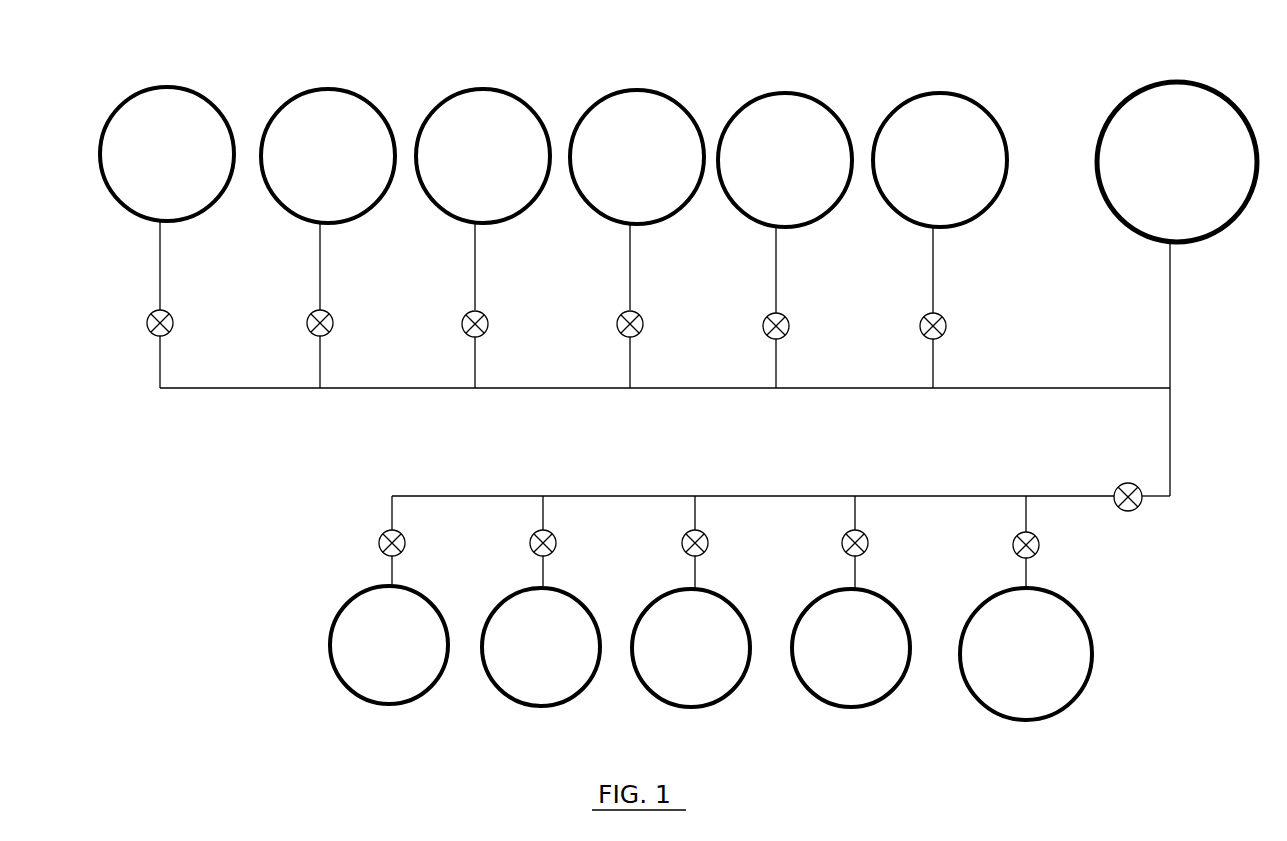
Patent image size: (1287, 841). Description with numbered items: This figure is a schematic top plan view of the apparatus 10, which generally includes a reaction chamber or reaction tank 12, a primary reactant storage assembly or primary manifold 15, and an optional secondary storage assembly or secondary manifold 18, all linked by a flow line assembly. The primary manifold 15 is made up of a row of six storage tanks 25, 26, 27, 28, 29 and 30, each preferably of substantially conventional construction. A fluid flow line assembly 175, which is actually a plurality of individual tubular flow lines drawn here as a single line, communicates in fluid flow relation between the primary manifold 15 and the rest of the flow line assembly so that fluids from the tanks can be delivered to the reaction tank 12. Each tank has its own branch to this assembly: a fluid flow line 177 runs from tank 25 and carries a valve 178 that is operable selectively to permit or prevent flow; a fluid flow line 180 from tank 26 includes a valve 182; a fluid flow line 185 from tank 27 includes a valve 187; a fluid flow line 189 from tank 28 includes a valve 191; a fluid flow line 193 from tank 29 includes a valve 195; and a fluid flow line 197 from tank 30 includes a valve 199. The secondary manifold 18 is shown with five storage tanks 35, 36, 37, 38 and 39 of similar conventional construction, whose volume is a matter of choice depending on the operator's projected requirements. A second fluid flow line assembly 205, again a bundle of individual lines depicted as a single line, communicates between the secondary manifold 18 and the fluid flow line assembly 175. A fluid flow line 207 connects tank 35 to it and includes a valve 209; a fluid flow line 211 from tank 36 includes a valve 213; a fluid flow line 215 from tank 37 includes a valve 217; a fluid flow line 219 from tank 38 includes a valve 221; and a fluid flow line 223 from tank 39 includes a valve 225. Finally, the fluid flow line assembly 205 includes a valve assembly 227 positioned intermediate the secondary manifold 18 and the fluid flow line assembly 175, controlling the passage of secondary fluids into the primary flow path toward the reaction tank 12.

The apparatus 10 is at (1033, 122).
The reaction tank 12 is at (1206, 78).
The primary manifold 15 is at (584, 98).
The secondary manifold 18 is at (323, 623).
The storage tank 25 is at (180, 130).
The storage tank 26 is at (341, 132).
The storage tank 27 is at (496, 132).
The storage tank 28 is at (650, 133).
The storage tank 29 is at (798, 136).
The storage tank 30 is at (953, 136).
The storage tank 35 is at (401, 690).
The storage tank 36 is at (553, 690).
The storage tank 37 is at (703, 692).
The storage tank 38 is at (863, 692).
The storage tank 39 is at (1038, 697).
The fluid flow line assembly 175 is at (619, 393).
The fluid flow line assembly 205 is at (782, 491).
The fluid flow line 177 is at (162, 259).
The valve 178 is at (169, 331).
The fluid flow line 180 is at (322, 259).
The valve 182 is at (329, 331).
The fluid flow line 185 is at (477, 259).
The valve 187 is at (484, 332).
The fluid flow line 189 is at (632, 261).
The valve 191 is at (639, 332).
The fluid flow line 193 is at (778, 262).
The valve 195 is at (785, 334).
The fluid flow line 197 is at (935, 262).
The valve 199 is at (942, 334).
The fluid flow line 207 is at (394, 571).
The valve 209 is at (402, 534).
The fluid flow line 211 is at (545, 571).
The valve 213 is at (553, 534).
The fluid flow line 215 is at (697, 572).
The valve 217 is at (705, 534).
The fluid flow line 219 is at (857, 572).
The valve 221 is at (865, 534).
The fluid flow line 223 is at (1028, 573).
The valve 225 is at (1036, 536).
The valve assembly 227 is at (1140, 512).